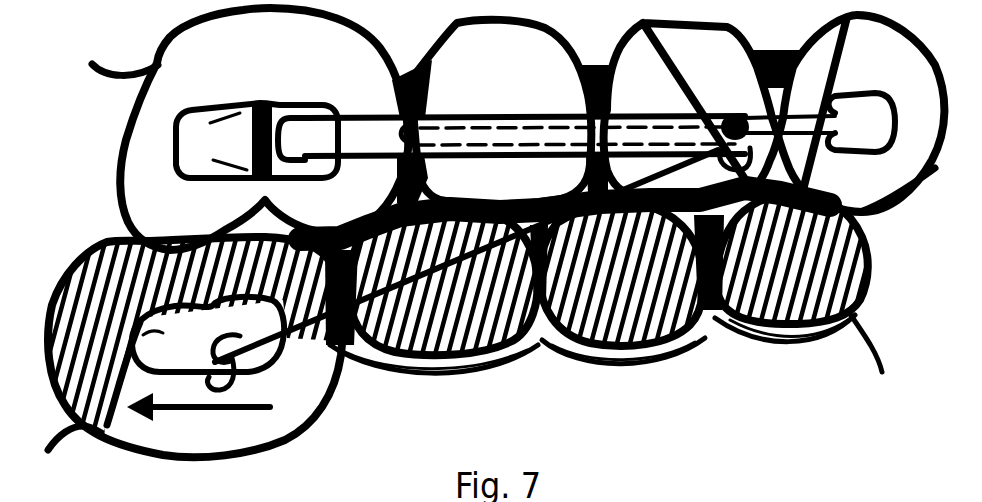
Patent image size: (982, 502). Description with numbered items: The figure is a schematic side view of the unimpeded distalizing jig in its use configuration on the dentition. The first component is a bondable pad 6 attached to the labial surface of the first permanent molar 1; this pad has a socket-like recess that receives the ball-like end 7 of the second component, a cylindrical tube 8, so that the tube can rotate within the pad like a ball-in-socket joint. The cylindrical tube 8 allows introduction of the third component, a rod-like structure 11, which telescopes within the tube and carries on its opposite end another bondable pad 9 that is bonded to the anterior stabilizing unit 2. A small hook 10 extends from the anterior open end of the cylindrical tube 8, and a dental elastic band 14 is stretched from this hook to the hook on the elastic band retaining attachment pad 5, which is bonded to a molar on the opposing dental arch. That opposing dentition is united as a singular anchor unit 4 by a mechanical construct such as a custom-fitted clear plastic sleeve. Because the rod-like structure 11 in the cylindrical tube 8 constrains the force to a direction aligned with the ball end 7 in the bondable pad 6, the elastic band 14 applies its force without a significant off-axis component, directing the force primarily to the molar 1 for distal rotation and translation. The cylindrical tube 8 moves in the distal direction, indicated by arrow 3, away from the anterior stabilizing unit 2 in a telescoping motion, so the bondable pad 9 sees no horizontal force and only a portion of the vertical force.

The first permanent molar 1 is at (264, 129).
The anterior stabilizing unit 2 is at (848, 113).
The arrow 3 is at (198, 417).
The anchor unit 4 is at (185, 347).
The elastic band retaining attachment pad 5 is at (208, 334).
The bondable pad 6 is at (257, 127).
The end of the cylindrical tube 7 is at (278, 141).
The cylindrical tube 8 is at (527, 135).
The bondable pad 9 is at (861, 122).
The hook 10 is at (722, 170).
The rod-like structure 11 is at (793, 130).
The elastic band 14 is at (280, 348).